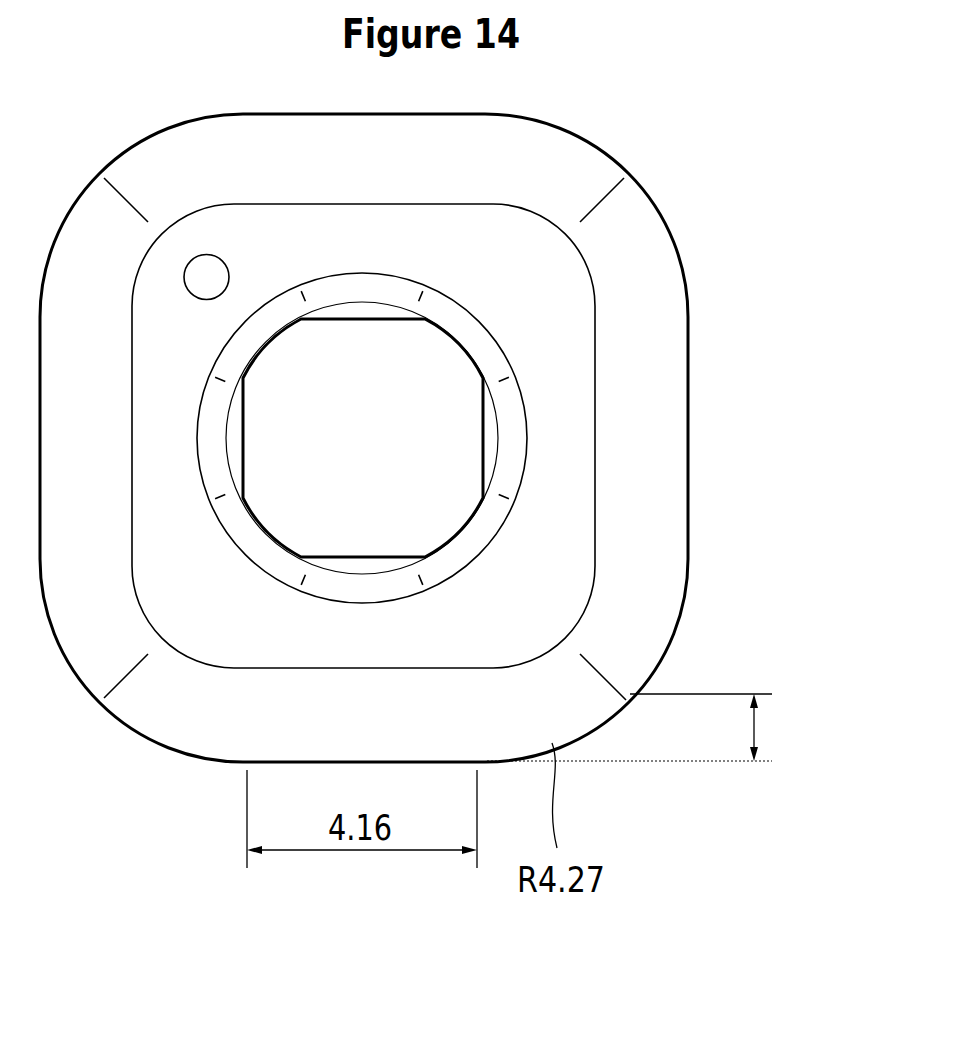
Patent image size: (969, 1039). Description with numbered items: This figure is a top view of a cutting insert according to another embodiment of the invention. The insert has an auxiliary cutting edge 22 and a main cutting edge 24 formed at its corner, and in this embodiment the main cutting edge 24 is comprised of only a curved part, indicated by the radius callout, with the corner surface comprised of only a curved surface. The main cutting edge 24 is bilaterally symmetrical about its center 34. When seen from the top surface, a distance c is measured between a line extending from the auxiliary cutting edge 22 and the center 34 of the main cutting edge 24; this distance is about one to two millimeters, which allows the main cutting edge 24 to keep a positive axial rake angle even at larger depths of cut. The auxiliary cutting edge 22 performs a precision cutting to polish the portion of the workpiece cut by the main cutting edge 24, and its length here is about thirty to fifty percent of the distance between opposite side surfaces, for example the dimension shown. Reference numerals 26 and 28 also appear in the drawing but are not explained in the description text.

The auxiliary cutting edge 22 is at (690, 437).
The main cutting edge 24 is at (614, 730).
The recessed inner surface 26 is at (560, 290).
The rim surface 28 is at (645, 365).
The center 34 is at (628, 697).